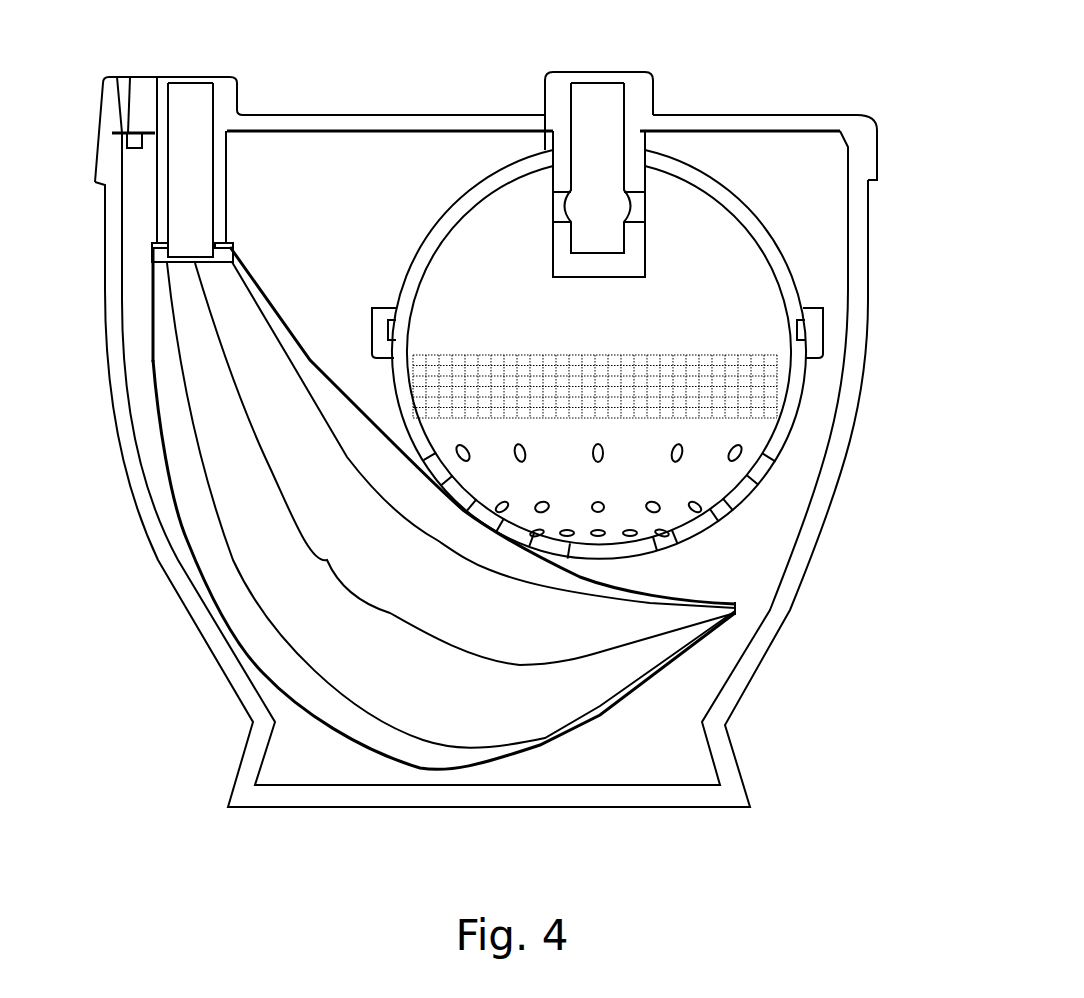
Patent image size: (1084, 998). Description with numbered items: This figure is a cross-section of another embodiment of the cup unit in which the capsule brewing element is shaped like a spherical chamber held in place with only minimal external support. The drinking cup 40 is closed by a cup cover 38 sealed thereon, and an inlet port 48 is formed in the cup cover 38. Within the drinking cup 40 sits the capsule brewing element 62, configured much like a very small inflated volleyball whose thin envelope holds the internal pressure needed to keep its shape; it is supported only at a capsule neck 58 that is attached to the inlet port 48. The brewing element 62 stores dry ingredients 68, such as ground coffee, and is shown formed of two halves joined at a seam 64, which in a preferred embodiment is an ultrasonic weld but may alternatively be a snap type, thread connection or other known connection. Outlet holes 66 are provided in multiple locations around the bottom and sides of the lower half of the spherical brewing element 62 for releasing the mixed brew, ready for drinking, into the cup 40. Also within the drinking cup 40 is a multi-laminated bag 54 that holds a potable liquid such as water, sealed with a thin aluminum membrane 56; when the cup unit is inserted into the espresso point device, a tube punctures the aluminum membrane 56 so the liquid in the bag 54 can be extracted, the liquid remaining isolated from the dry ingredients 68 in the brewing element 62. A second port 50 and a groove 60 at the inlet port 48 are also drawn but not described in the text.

The cup cover 38 is at (285, 113).
The drinking cup 40 is at (153, 552).
The inlet port 48 is at (615, 72).
The outlet port 50 is at (182, 77).
The multi-laminated bag 54 is at (278, 690).
The aluminum membrane 56 is at (183, 262).
The capsule neck 58 is at (548, 140).
The groove 60 is at (640, 203).
The capsule brewing element 62 is at (812, 221).
The seam 64 is at (823, 322).
The outlet holes 66 is at (683, 455).
The dry ingredients 68 is at (717, 400).